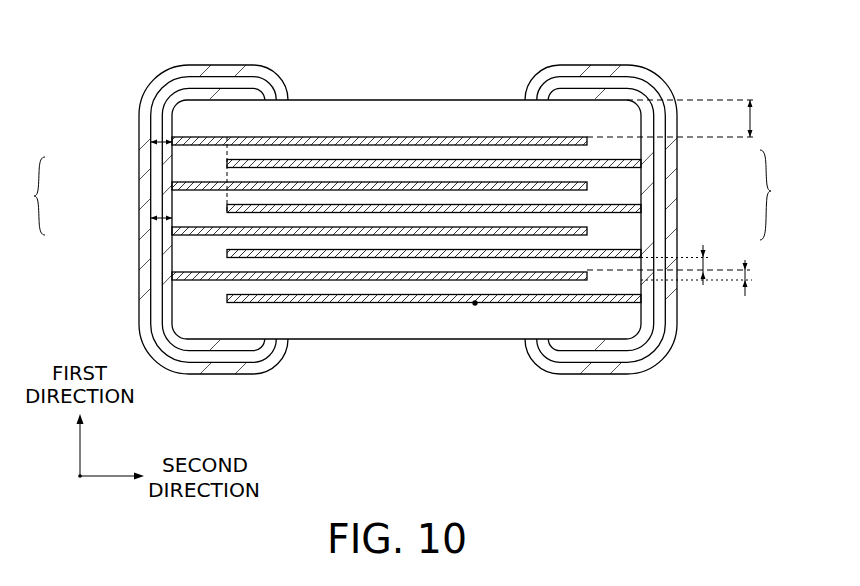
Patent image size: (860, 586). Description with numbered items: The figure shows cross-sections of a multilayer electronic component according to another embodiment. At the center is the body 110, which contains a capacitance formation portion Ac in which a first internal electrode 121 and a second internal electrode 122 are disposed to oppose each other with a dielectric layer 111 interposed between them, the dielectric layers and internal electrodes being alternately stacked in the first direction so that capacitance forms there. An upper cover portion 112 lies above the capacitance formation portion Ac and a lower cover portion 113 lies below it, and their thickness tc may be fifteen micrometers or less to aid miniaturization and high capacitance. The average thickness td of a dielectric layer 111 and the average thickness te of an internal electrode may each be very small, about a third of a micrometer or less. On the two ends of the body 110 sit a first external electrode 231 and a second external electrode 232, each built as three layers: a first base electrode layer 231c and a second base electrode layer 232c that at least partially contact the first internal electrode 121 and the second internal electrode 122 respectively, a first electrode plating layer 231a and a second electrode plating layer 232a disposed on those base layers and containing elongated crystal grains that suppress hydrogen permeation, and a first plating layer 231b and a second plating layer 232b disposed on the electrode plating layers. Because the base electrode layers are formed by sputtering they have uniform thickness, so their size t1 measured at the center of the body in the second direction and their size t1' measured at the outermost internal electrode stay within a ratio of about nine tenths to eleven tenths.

The body 110 is at (348, 98).
The dielectric layer 111 is at (292, 152).
The upper cover portion 112 is at (403, 117).
The lower cover portion 113 is at (405, 322).
The first internal electrode 121 is at (460, 137).
The second internal electrode 122 is at (518, 153).
The capacitance formation portion Ac is at (475, 303).
The first external electrode 231 is at (144, 219).
The first electrode plating layer 231a is at (142, 195).
The first plating layer 231b is at (142, 230).
The first base electrode layer 231c is at (142, 164).
The second external electrode 232 is at (666, 219).
The second electrode plating layer 232a is at (668, 199).
The second plating layer 232b is at (670, 238).
The second base electrode layer 232c is at (660, 163).
The size of base electrode layer at body center t1 is at (127, 249).
The size of base electrode layer at outermost internal electrode t1' is at (125, 126).
The thickness of cover portion tc is at (682, 118).
The average thickness of dielectric layer td is at (668, 265).
The average thickness of internal electrode te is at (706, 278).